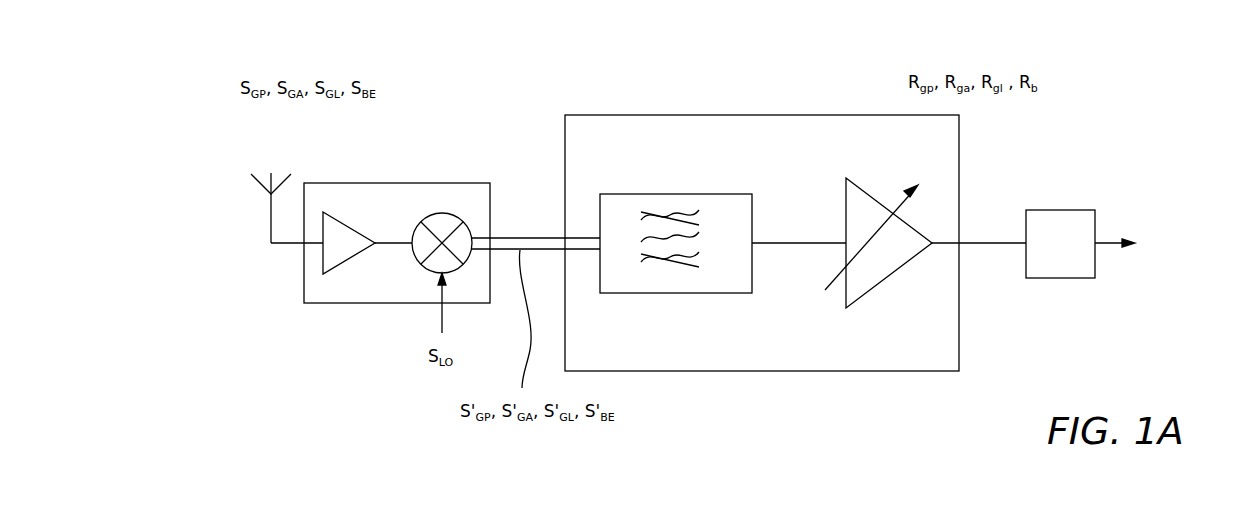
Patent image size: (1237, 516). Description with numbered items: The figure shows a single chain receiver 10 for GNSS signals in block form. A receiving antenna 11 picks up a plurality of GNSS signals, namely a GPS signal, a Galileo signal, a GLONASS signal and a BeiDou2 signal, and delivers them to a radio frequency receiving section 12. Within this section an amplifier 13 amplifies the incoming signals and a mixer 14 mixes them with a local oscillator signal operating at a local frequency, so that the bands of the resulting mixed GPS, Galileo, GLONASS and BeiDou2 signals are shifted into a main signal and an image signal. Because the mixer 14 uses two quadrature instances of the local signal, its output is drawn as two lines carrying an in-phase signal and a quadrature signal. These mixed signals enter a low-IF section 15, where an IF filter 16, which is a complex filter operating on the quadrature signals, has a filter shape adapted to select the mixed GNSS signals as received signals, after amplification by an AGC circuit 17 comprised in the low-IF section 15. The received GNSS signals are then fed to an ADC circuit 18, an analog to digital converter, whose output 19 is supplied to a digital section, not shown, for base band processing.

The single chain receiver 10 is at (590, 73).
The receiving antenna 11 is at (271, 196).
The radio frequency receiving section 12 is at (404, 183).
The amplifier 13 is at (323, 248).
The mixer 14 is at (441, 220).
The low-IF section 15 is at (762, 115).
The IF filter 16 is at (717, 203).
The AGC circuit 17 is at (853, 200).
The ADC circuit 18 is at (1056, 224).
The output 19 is at (1130, 244).